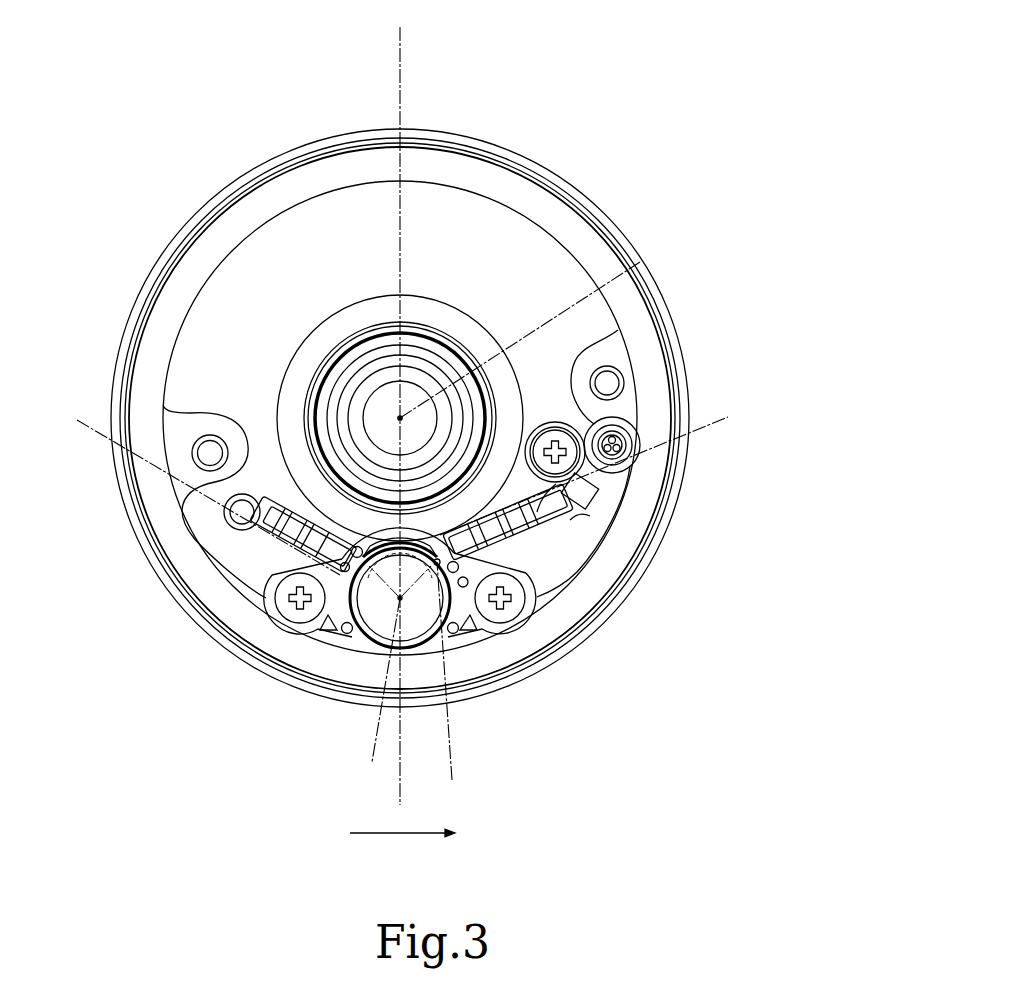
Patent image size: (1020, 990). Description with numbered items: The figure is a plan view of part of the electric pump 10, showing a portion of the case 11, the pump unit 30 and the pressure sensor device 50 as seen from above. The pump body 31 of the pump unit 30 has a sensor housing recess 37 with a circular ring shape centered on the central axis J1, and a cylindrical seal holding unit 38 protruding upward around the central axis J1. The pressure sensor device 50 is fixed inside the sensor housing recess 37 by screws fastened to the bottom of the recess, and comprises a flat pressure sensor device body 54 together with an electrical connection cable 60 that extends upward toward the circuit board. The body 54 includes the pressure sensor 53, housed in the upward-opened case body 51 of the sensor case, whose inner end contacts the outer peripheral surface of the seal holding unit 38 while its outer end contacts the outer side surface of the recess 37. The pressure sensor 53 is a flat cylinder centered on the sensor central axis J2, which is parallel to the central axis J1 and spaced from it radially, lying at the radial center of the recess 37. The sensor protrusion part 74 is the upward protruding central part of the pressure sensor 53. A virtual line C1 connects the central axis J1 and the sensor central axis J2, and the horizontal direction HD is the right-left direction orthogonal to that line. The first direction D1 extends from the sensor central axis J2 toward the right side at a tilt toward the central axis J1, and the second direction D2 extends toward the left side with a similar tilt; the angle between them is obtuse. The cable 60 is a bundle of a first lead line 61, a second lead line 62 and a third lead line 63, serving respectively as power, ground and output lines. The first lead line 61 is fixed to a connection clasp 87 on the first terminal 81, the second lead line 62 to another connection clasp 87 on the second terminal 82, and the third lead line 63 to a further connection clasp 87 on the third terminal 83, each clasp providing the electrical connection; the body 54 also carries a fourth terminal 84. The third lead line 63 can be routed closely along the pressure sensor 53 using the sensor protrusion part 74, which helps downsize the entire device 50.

The electric pump 10 is at (655, 90).
The case 11 is at (594, 188).
The pump unit 30 is at (710, 388).
The pump body 31 is at (369, 140).
The sensor housing recess 37 is at (449, 192).
The seal holding unit 38 is at (332, 333).
The virtual line C1 is at (400, 92).
The central axis J1 is at (640, 262).
The sensor central axis J2 is at (453, 685).
The first direction D1 is at (705, 433).
The second direction D2 is at (93, 430).
The pressure sensor device 50 is at (597, 530).
The case body 51 is at (372, 635).
The pressure sensor 53 is at (430, 655).
The pressure sensor device body 54 is at (526, 645).
The electrical connection cable 60 is at (628, 462).
The first lead line 61 is at (583, 560).
The second lead line 62 is at (568, 545).
The third lead line 63 is at (236, 524).
The sensor protrusion part 74 is at (437, 566).
The first terminal 81 is at (485, 626).
The second terminal 82 is at (453, 520).
The third terminal 83 is at (298, 626).
The fourth terminal 84 is at (262, 548).
The connection clasp 87 is at (468, 522).
The horizontal direction HD is at (420, 834).